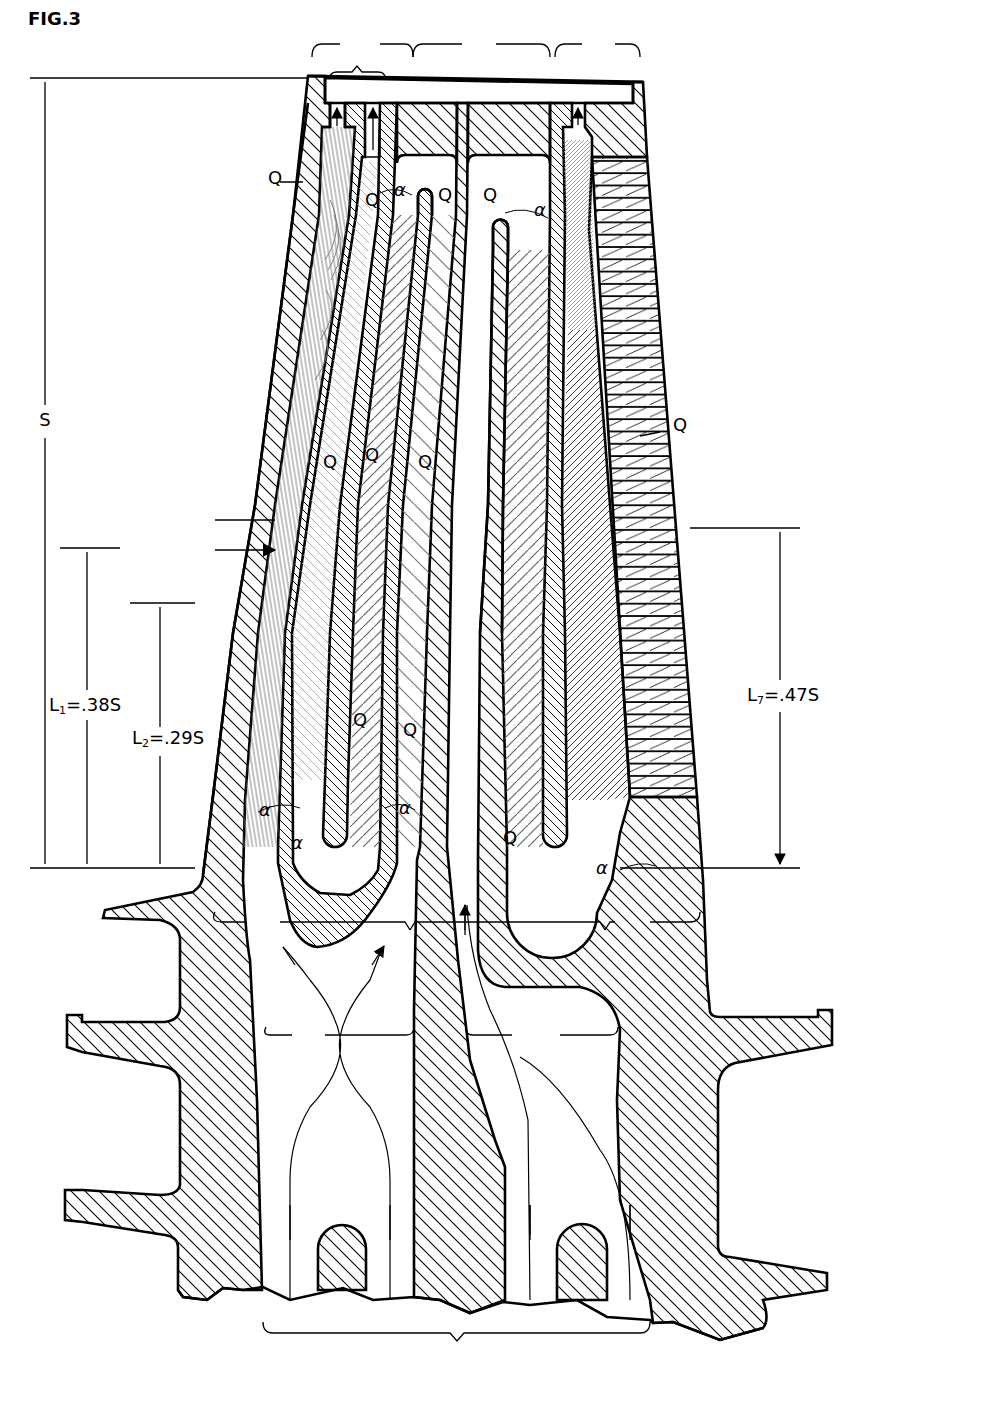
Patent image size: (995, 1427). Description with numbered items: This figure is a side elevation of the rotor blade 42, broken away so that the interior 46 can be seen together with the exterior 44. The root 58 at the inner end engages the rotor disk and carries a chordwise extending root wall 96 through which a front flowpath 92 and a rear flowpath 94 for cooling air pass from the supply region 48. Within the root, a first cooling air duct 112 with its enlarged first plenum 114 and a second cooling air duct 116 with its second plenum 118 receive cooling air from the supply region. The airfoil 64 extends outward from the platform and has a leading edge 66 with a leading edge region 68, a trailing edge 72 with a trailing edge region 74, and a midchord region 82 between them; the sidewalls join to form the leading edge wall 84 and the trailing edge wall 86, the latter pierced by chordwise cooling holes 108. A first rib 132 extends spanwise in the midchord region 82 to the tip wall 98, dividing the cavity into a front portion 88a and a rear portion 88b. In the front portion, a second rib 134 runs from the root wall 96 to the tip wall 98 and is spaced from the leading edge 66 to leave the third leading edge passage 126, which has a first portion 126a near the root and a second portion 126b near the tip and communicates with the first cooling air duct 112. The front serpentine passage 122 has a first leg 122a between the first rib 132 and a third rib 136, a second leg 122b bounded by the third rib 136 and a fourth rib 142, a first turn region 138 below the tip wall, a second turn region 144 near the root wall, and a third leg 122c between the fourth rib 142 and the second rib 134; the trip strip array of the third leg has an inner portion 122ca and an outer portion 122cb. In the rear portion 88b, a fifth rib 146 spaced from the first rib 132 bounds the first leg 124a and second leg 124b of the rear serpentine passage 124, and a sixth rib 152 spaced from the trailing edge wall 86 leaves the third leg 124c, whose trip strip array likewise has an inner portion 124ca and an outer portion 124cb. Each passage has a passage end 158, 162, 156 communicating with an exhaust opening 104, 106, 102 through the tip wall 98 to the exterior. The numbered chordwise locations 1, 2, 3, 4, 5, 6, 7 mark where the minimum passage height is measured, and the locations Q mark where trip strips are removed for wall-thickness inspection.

The chordwise location 1 is at (257, 842).
The chordwise location 2 is at (303, 861).
The chordwise location 3 is at (369, 837).
The chordwise location 4 is at (406, 847).
The chordwise location 5 is at (333, 687).
The chordwise location 6 is at (519, 861).
The chordwise location 7 is at (587, 837).
The rotor blade 42 is at (235, 110).
The exterior 44 is at (312, 76).
The interior 46 is at (514, 204).
The supply region 48 is at (456, 1343).
The root 58 is at (712, 963).
The airfoil 64 is at (278, 458).
The leading edge 66 is at (312, 113).
The leading edge region 68 is at (313, 480).
The trailing edge 72 is at (650, 130).
The trailing edge region 74 is at (627, 480).
The midchord region 82 is at (499, 491).
The leading edge wall 84 is at (303, 205).
The trailing edge wall 86 is at (652, 262).
The front portion of cavity 88a is at (339, 1034).
The rear portion of cavity 88b is at (542, 1034).
The front flowpath 92 is at (356, 1058).
The rear flowpath 94 is at (660, 329).
The root wall 96 is at (670, 925).
The tip wall 98 is at (498, 179).
The opening in tip wall 102 is at (323, 90).
The opening in tip wall 104 is at (378, 103).
The opening in tip wall 106 is at (570, 102).
The cooling holes 108 is at (683, 352).
The first cooling air duct 112 is at (318, 1197).
The first plenum 114 is at (275, 1088).
The second cooling air duct 116 is at (557, 1197).
The second plenum 118 is at (585, 1062).
The front serpentine passage 122 is at (438, 150).
The first leg of front serpentine passage 122a is at (388, 944).
The second leg of front serpentine passage 122b is at (336, 864).
The third leg of front serpentine passage 122c is at (363, 552).
The inner portion of trip strip array 122ca is at (305, 700).
The outer portion of trip strip array 122cb is at (345, 338).
The rear serpentine passage 124 is at (497, 150).
The first leg of rear serpentine passage 124a is at (510, 925).
The second leg of rear serpentine passage 124b is at (528, 580).
The third leg of rear serpentine passage 124c is at (557, 487).
The outlet leg lower portion 124ca is at (620, 692).
The outlet leg upper portion 124cb is at (587, 332).
The third leading edge passage 126 is at (300, 150).
The first portion of third passage 126a is at (317, 308).
The second portion of third passage 126b is at (290, 266).
The first rib 132 is at (445, 478).
The second rib 134 is at (332, 240).
The third rib 136 is at (410, 402).
The first turn region 138 is at (443, 167).
The fourth rib 142 is at (360, 395).
The second turn region 144 is at (207, 872).
The fifth rib 146 is at (487, 527).
The rib wall 152 is at (520, 615).
The passage end 156 is at (322, 136).
The passage end 158 is at (382, 160).
The passage end 162 is at (582, 122).